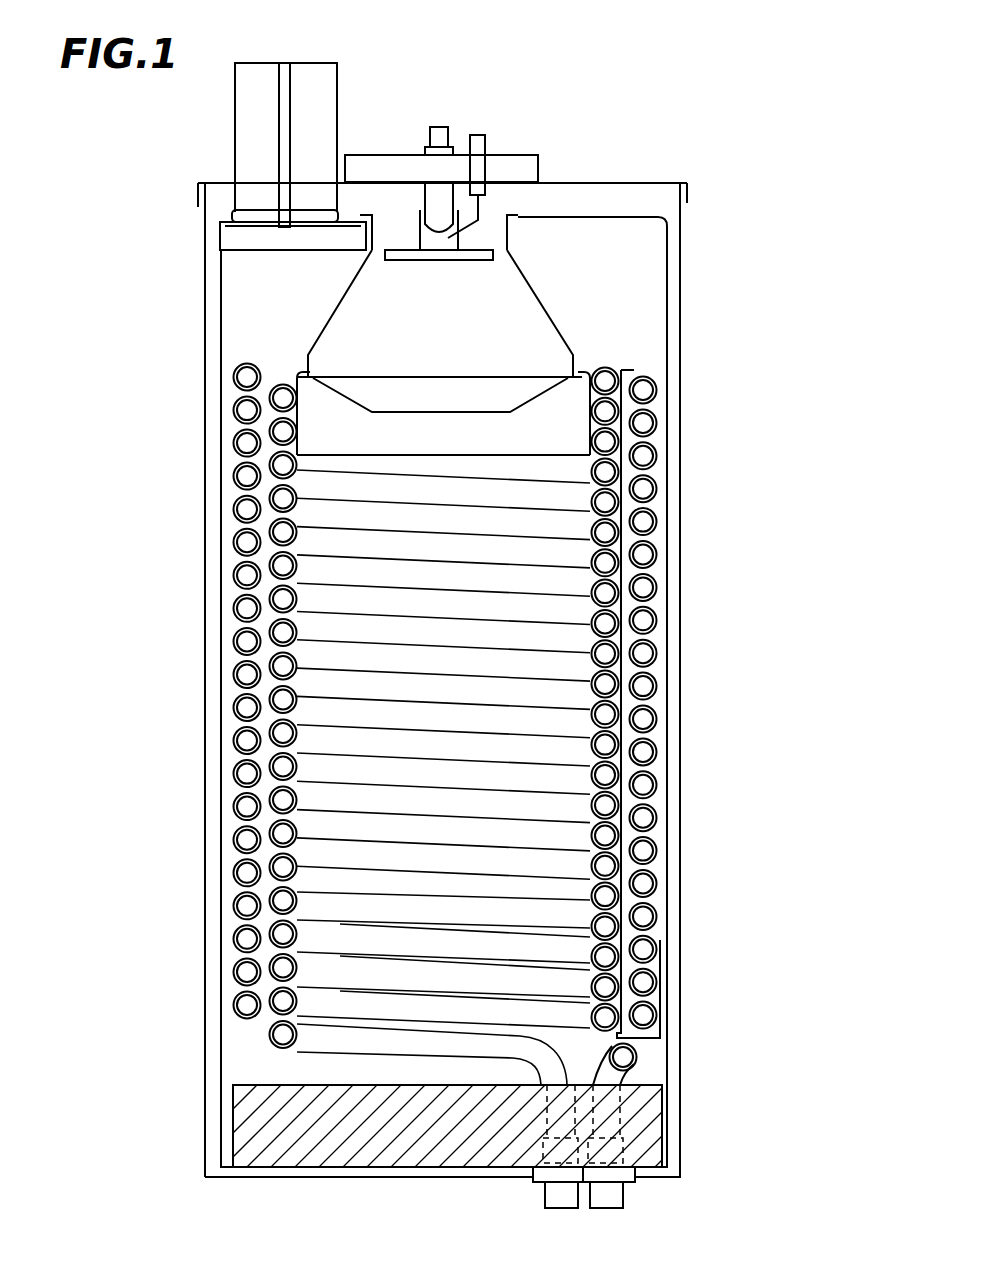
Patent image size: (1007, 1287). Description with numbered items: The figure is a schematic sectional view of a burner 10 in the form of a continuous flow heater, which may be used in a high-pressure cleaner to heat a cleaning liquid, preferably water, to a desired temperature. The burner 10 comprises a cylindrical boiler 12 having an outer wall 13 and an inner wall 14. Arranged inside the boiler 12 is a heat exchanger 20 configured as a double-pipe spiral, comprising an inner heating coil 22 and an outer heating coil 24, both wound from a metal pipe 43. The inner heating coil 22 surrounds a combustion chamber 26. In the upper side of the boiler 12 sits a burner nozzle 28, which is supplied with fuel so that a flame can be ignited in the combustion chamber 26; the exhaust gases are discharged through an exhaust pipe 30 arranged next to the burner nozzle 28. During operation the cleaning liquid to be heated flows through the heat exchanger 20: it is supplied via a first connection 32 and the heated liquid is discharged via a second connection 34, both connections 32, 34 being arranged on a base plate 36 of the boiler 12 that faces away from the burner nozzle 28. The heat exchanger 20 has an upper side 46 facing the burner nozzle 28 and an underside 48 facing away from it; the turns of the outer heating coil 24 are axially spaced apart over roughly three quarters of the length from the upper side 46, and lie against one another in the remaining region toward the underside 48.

The burner 10 is at (606, 121).
The boiler 12 is at (683, 262).
The outer wall 13 is at (681, 300).
The inner wall 14 is at (667, 333).
The heat exchanger 20 is at (257, 1027).
The inner heating coil 22 is at (277, 1047).
The outer heating coil 24 is at (240, 1012).
The combustion chamber 26 is at (402, 606).
The burner nozzle 28 is at (442, 225).
The exhaust pipe 30 is at (318, 98).
The first connection 32 is at (621, 1193).
The second connection 34 is at (547, 1193).
The base plate 36 is at (452, 1152).
The metal pipe 43 is at (357, 1045).
The upper side 46 is at (247, 363).
The underside 48 is at (402, 1060).